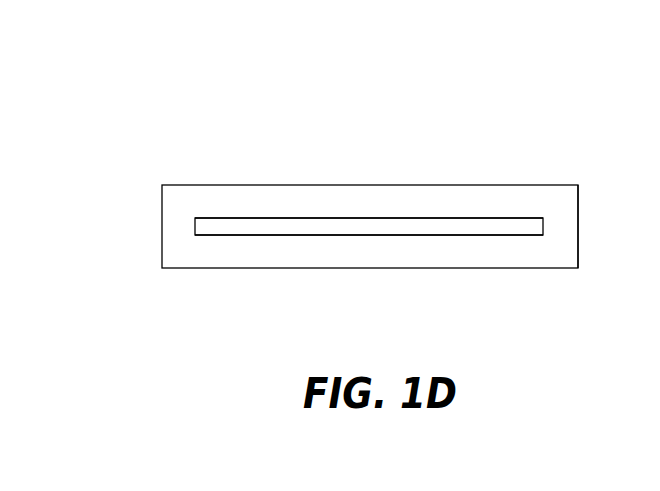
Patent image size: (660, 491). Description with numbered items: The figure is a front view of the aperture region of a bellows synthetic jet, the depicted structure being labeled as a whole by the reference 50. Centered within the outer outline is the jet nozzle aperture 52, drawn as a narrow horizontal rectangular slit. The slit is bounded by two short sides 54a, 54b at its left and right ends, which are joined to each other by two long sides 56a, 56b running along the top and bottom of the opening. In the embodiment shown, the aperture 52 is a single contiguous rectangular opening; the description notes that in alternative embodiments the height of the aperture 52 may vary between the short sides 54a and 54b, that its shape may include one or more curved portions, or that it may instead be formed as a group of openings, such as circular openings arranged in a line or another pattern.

The test structure / device 50 is at (181, 53).
The jet nozzle aperture 52 is at (373, 227).
The short side 54a is at (195, 228).
The short side 54b is at (546, 226).
The long side 56a is at (288, 235).
The long side 56b is at (288, 218).